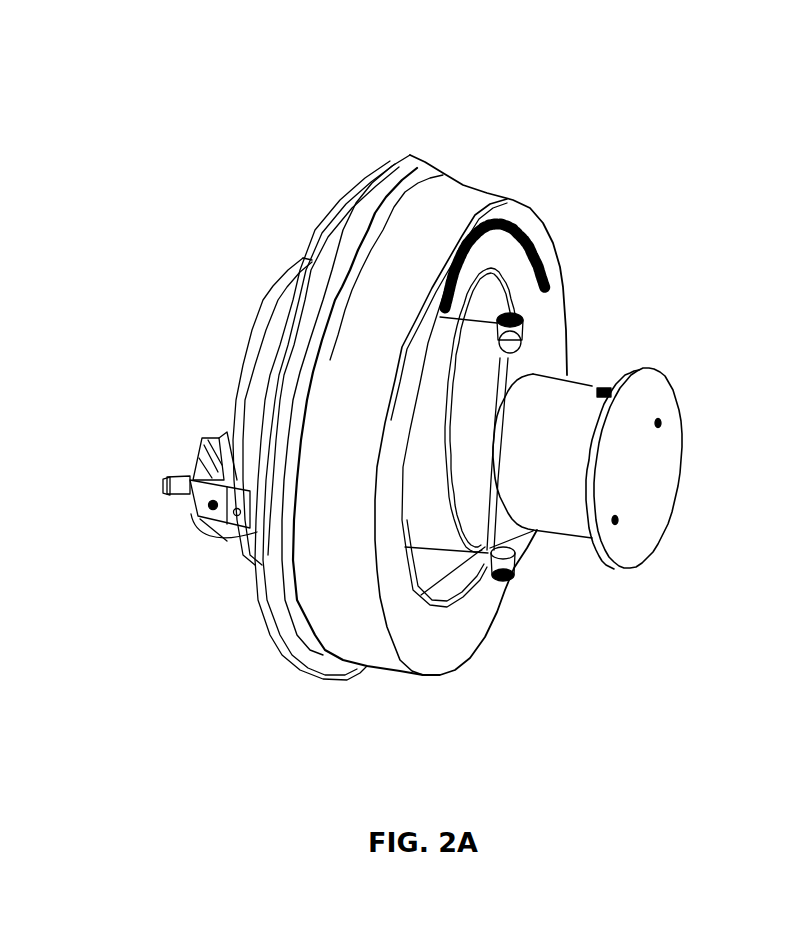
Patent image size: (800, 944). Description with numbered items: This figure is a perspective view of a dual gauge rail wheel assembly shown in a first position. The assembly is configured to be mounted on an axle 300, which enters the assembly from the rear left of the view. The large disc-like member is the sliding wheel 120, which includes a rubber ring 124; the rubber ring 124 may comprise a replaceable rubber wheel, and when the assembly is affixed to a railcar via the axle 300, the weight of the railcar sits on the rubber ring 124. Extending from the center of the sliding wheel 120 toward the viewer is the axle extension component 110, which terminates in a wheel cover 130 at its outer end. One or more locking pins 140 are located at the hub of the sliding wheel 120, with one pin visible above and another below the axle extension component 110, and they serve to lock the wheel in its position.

The axle extension component 110 is at (562, 398).
The sliding wheel 120 is at (358, 210).
The rubber ring 124 is at (417, 228).
The wheel cover 130 is at (635, 483).
The locking pin 140 is at (522, 317).
The axle 300 is at (236, 388).